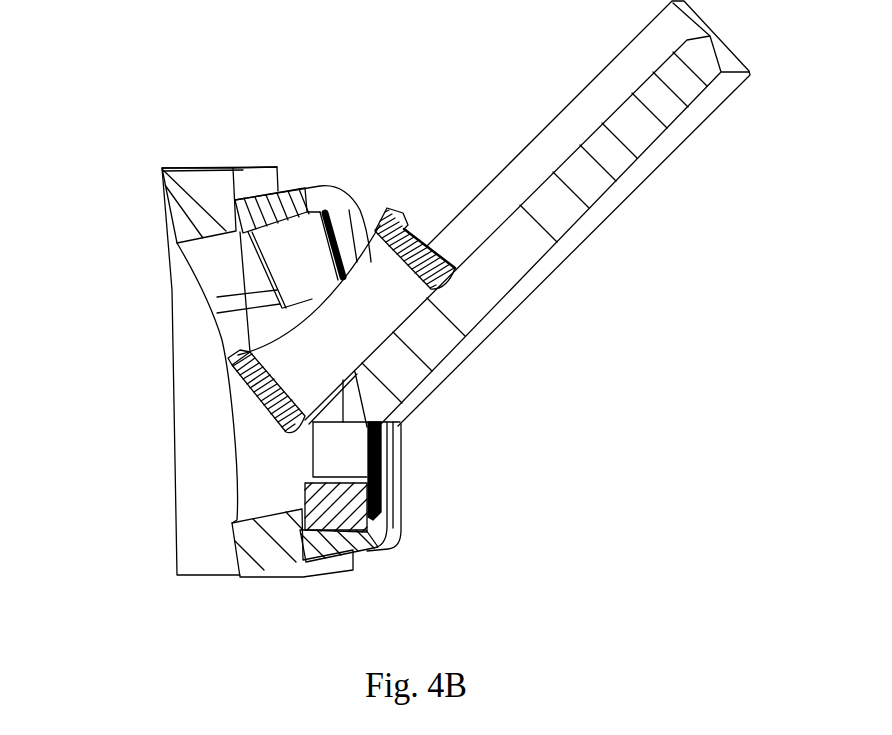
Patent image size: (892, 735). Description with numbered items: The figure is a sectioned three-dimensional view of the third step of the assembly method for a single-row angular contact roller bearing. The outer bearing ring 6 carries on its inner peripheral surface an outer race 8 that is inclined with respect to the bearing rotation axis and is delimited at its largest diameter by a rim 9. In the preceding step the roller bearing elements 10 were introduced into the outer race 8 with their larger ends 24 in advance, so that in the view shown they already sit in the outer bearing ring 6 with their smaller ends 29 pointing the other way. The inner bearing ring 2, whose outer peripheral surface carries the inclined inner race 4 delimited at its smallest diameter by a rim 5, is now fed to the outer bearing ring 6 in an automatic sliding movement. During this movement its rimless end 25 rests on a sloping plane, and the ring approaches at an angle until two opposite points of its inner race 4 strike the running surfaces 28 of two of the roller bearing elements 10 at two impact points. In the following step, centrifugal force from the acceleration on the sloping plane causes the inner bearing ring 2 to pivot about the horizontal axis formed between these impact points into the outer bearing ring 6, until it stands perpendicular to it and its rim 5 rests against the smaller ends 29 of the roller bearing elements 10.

The inner bearing ring 2 is at (250, 333).
The inner race 4 is at (425, 228).
The rim 5 is at (410, 210).
The outer bearing ring 6 is at (292, 165).
The outer race 8 is at (298, 255).
The rim 9 is at (346, 185).
The roller bearing elements 10 is at (350, 446).
The larger ends 24 is at (380, 484).
The rimless end 25 is at (237, 229).
The running surfaces 28 is at (371, 462).
The smaller ends 29 is at (305, 484).